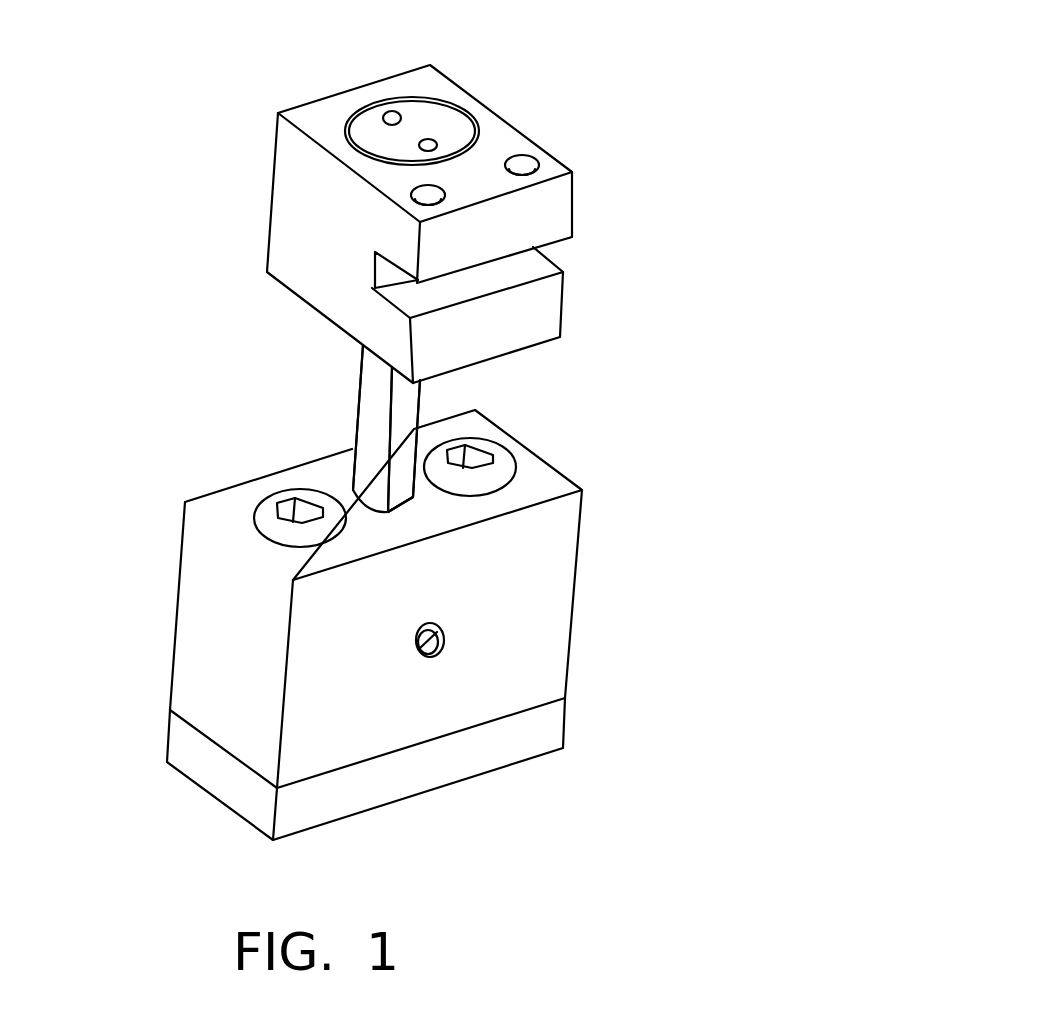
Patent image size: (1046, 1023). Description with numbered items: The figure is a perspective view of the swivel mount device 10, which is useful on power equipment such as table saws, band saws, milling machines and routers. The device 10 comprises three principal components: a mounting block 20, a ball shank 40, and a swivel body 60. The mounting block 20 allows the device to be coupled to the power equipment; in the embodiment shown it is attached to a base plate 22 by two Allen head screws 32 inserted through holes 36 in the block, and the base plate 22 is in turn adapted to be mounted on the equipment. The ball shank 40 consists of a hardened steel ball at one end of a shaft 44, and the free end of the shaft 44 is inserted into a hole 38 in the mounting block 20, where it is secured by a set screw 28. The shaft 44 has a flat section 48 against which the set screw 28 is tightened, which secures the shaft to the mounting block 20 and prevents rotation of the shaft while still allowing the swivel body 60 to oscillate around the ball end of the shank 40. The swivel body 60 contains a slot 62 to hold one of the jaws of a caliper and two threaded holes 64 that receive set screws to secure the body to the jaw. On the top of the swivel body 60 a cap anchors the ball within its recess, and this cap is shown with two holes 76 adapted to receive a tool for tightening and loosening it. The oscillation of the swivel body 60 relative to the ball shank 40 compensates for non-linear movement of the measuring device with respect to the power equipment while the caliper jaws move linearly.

The device 10 is at (195, 153).
The mounting block 20 is at (503, 565).
The base plate 22 is at (505, 733).
The set screw 28 is at (445, 637).
The Allen head screws 32 is at (472, 455).
The holes 36 is at (513, 473).
The hole 38 is at (397, 512).
The ball shank 40 is at (347, 418).
The shaft 44 is at (378, 390).
The flat section 48 is at (403, 442).
The swivel body 60 is at (532, 213).
The slot 62 is at (387, 273).
The threaded holes 64 is at (530, 163).
The holes 76 is at (392, 118).